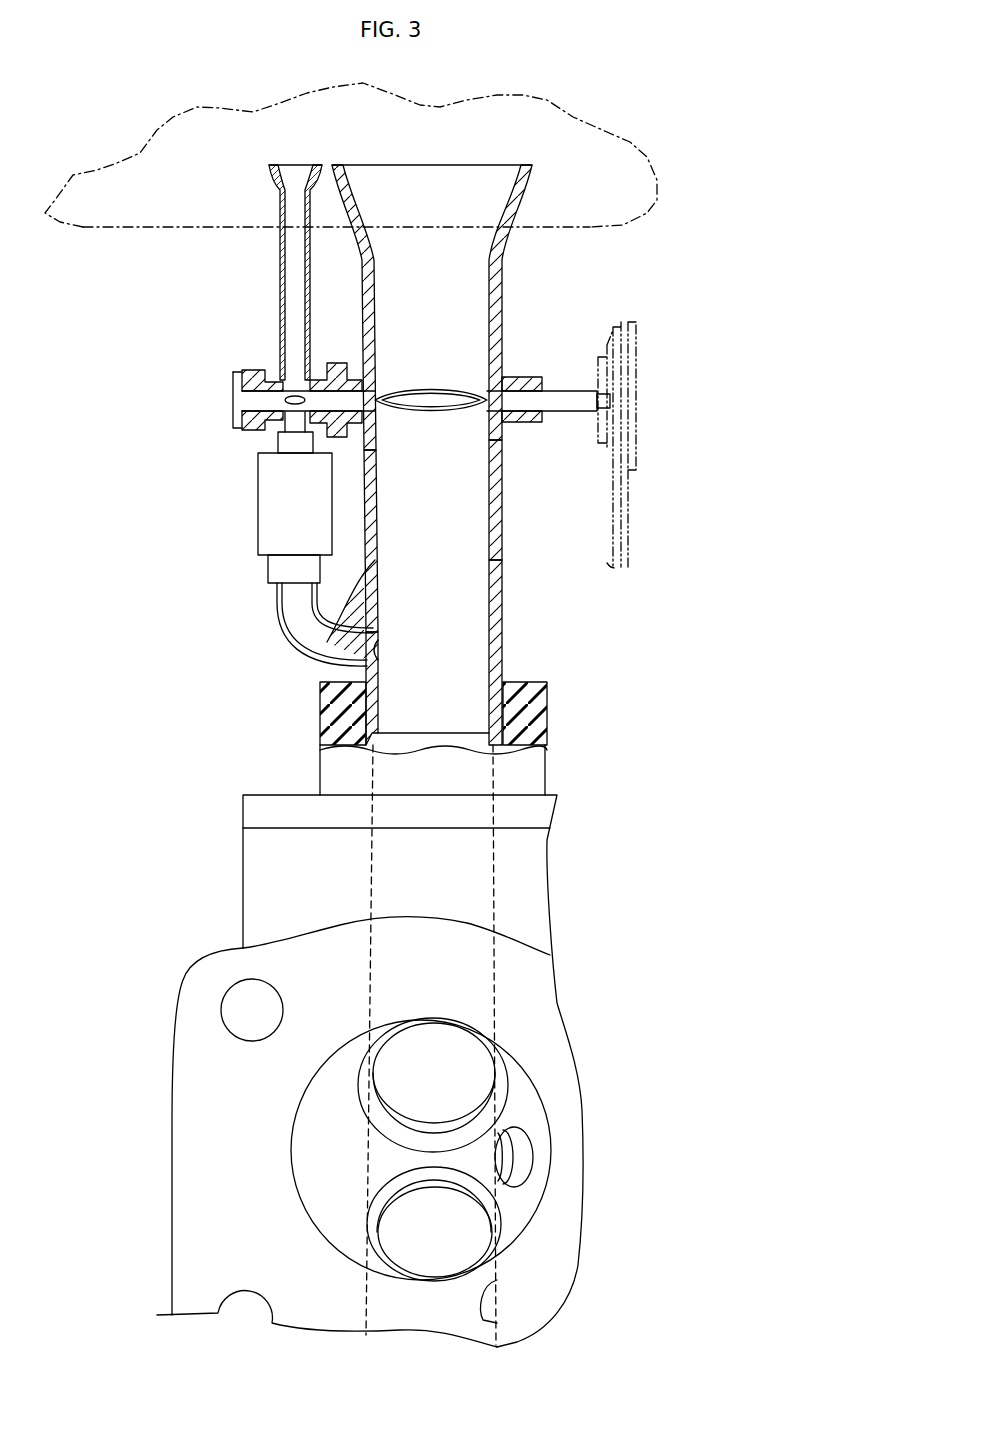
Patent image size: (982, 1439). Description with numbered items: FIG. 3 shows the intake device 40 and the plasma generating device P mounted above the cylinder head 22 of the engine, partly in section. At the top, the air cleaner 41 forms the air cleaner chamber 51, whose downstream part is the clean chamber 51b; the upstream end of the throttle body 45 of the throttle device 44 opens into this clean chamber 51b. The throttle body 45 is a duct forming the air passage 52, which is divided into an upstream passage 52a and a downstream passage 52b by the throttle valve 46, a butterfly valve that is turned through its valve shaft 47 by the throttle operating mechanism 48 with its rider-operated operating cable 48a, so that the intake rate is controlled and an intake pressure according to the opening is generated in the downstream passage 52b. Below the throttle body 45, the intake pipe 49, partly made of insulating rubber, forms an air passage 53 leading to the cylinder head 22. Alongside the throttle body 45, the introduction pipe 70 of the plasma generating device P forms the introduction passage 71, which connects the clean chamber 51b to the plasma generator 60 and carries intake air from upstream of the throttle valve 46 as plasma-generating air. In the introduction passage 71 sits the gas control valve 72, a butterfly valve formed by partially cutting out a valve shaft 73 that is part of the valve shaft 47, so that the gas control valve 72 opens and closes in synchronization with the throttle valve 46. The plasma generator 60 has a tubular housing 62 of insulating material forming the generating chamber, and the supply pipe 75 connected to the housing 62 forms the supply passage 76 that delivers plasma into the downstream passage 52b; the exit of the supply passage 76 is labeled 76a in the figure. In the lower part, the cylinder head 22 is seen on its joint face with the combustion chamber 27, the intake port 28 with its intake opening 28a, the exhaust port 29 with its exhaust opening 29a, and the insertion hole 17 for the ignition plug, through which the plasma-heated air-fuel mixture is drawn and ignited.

The air cleaner chamber 51 is at (389, 155).
The clean chamber 51b is at (617, 166).
The air cleaner 41 is at (135, 233).
The intake device 40 is at (653, 257).
The air passage 52 is at (457, 455).
The upstream passage 52a is at (460, 304).
The downstream passage 52b is at (443, 605).
The throttle body 45 is at (500, 470).
The throttle device 44 is at (523, 540).
The throttle valve 46 is at (438, 412).
The valve shaft 47 is at (520, 380).
The intake pipe 49 is at (547, 725).
The supply passage 76 is at (377, 560).
The pressure passage opening 76a is at (378, 652).
The throttle operating mechanism 48 is at (661, 445).
The operating cable 48a is at (630, 530).
The plasma generating device P is at (192, 485).
The introduction pipe 70 is at (287, 298).
The introduction passage 71 is at (298, 275).
The gas control valve 72 is at (297, 390).
The valve shaft 73 is at (273, 380).
The plasma generator 60 is at (295, 507).
The tubular housing 62 is at (307, 488).
The supply pipe 75 is at (297, 650).
The air passage 53 is at (400, 750).
The cylinder head 22 is at (166, 1149).
The combustion chamber 27 is at (323, 1132).
The intake port 28 is at (373, 1007).
The intake opening 28a is at (445, 1058).
The exhaust opening 29a is at (423, 1213).
The exhaust port 29 is at (497, 1280).
The insertion hole 17 is at (523, 1150).